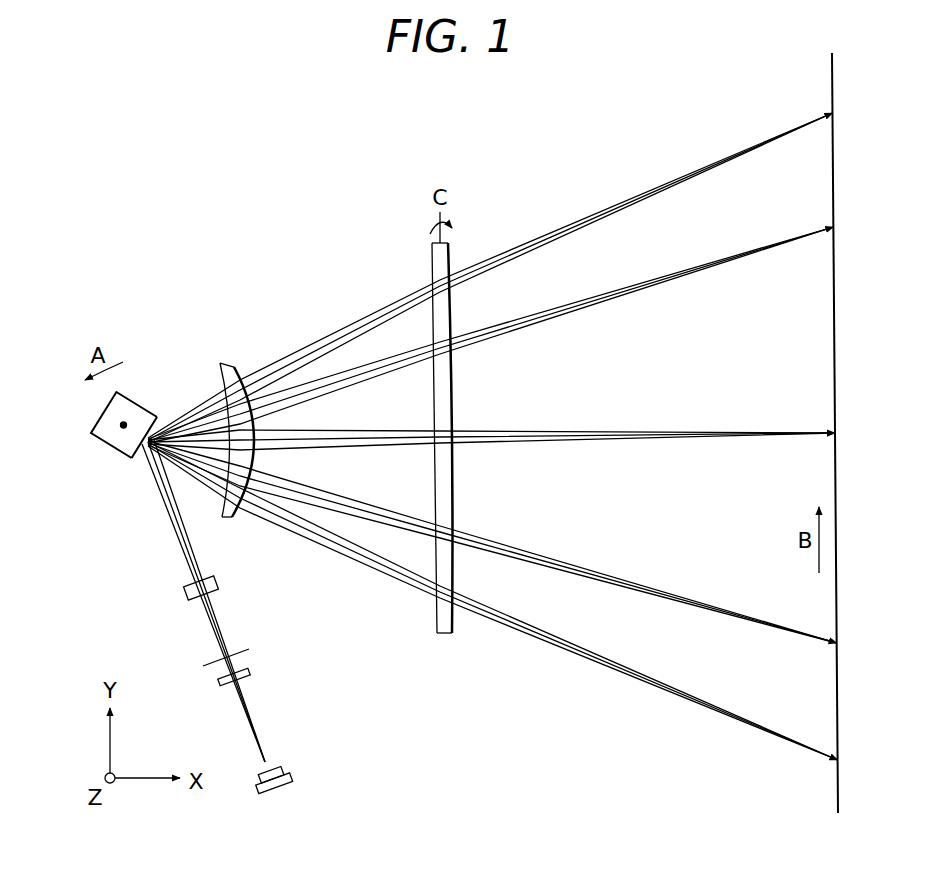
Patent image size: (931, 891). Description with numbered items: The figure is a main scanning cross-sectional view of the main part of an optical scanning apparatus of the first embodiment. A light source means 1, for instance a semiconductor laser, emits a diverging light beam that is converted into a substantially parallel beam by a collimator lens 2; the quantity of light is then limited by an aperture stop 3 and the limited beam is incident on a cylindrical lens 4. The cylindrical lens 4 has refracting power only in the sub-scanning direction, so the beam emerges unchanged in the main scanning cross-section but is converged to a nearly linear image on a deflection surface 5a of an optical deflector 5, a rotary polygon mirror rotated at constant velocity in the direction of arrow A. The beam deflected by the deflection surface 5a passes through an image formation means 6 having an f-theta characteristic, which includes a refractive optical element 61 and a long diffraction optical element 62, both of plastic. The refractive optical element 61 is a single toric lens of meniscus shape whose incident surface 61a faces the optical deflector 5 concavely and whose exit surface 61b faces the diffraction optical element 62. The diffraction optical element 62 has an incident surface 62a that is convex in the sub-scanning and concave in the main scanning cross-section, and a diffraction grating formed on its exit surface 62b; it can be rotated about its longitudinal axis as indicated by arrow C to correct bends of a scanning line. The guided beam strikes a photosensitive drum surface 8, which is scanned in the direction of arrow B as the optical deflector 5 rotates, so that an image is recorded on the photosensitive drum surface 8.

The light source means 1 is at (259, 782).
The collimator lens 2 is at (218, 683).
The aperture stop 3 is at (204, 662).
The cylindrical lens 4 is at (188, 592).
The optical deflector 5 is at (119, 463).
The deflection surface 5a is at (136, 460).
The image formation means 6 is at (210, 304).
The refractive optical element 61 is at (247, 438).
The incident surface of the toric lens 61a is at (221, 514).
The exit surface of the toric lens 61b is at (236, 514).
The diffraction optical element 62 is at (439, 464).
The incident surface of the diffraction optical element 62a is at (436, 620).
The exit surface of the diffraction optical element 62b is at (452, 620).
The photosensitive drum surface 8 is at (828, 72).